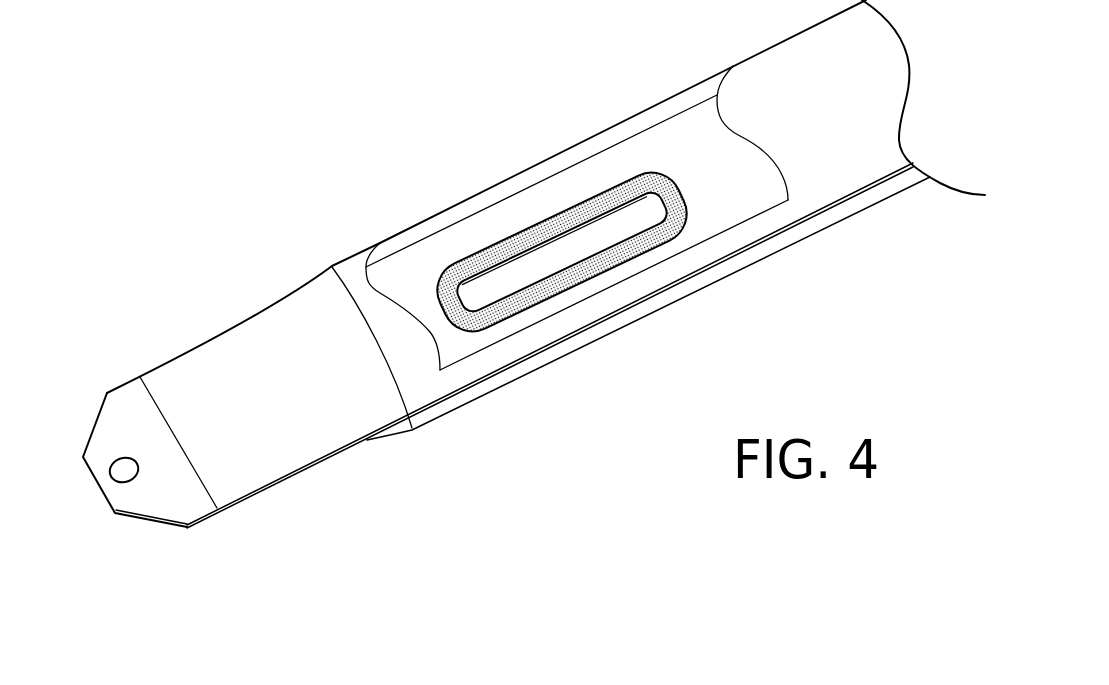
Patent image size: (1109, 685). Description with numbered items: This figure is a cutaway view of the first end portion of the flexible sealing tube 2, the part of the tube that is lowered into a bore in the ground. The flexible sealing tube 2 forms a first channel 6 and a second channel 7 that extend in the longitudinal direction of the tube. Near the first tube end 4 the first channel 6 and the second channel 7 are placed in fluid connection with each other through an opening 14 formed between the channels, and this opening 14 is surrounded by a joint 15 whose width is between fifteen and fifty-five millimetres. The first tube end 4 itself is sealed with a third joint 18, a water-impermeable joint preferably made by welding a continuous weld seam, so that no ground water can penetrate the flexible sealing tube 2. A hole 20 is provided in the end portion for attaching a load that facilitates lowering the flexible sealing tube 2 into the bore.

The flexible sealing tube 2 is at (332, 266).
The first tube end 4 is at (160, 523).
The first channel 6 is at (793, 100).
The second channel 7 is at (832, 216).
The opening 14 is at (583, 247).
The joint 15 is at (521, 237).
The third joint 18 is at (195, 480).
The hole 20 is at (127, 468).